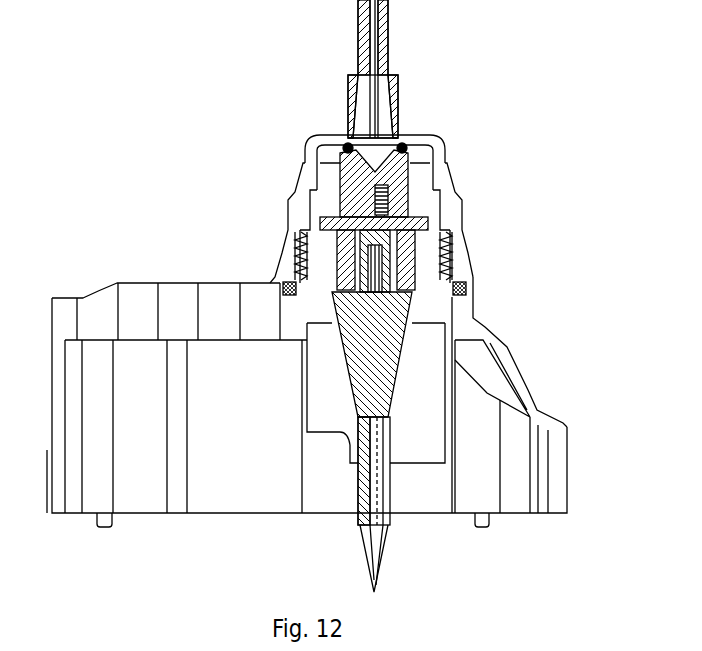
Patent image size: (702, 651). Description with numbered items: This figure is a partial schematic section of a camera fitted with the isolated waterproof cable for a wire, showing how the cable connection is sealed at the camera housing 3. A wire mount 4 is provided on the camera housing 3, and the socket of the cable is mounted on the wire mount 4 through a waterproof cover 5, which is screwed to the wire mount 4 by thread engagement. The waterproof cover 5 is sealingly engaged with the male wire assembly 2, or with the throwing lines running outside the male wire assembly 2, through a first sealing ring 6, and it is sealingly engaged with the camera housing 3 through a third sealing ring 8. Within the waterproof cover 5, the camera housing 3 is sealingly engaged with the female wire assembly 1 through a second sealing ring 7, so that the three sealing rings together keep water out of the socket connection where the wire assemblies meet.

The female wire assembly 1 is at (390, 320).
The male wire assembly 2 is at (355, 113).
The camera housing 3 is at (133, 305).
The wire mount 4 is at (447, 247).
The waterproof cover 5 is at (455, 195).
The first sealing ring 6 is at (343, 147).
The second sealing ring 7 is at (300, 225).
The third sealing ring 8 is at (283, 283).